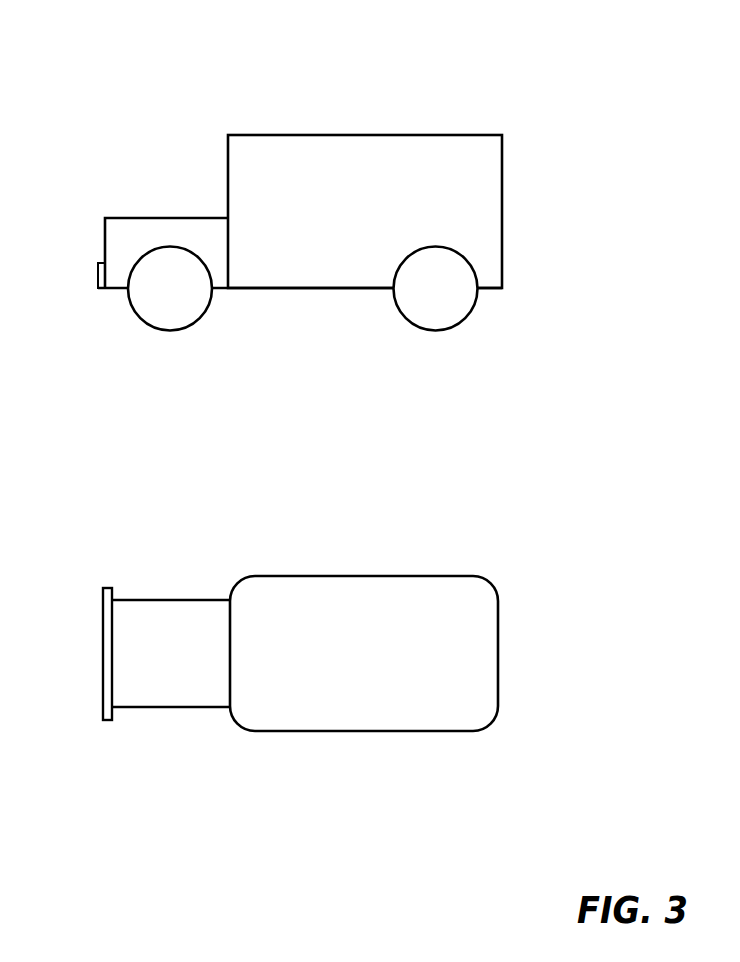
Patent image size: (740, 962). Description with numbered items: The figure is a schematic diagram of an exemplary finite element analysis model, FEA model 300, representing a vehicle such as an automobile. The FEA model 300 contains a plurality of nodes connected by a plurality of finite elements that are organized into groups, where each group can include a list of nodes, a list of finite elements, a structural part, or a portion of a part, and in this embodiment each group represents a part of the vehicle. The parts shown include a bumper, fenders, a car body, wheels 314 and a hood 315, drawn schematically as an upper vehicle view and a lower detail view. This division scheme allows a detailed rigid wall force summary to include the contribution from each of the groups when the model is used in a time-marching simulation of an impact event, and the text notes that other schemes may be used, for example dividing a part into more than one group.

The FEA model 300 is at (313, 53).
The wheels 314 is at (171, 311).
The hood 315 is at (190, 666).